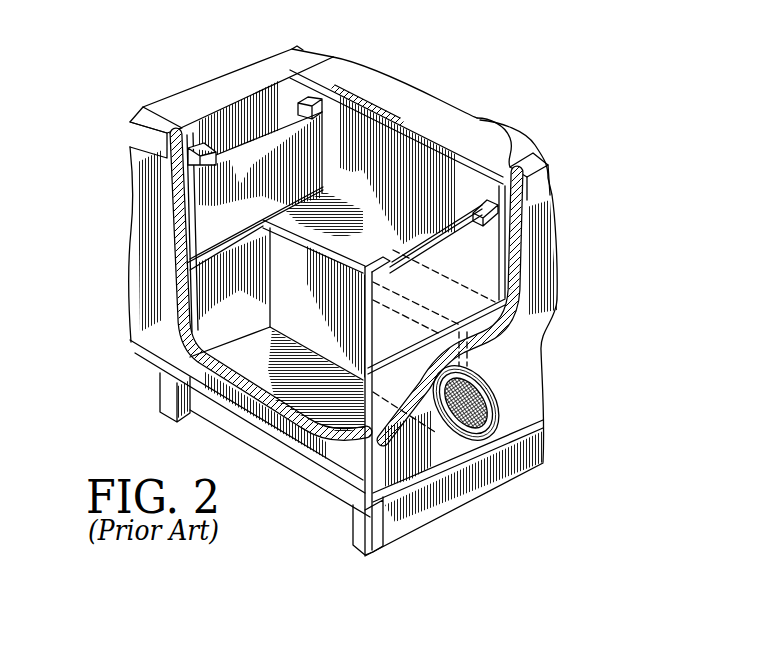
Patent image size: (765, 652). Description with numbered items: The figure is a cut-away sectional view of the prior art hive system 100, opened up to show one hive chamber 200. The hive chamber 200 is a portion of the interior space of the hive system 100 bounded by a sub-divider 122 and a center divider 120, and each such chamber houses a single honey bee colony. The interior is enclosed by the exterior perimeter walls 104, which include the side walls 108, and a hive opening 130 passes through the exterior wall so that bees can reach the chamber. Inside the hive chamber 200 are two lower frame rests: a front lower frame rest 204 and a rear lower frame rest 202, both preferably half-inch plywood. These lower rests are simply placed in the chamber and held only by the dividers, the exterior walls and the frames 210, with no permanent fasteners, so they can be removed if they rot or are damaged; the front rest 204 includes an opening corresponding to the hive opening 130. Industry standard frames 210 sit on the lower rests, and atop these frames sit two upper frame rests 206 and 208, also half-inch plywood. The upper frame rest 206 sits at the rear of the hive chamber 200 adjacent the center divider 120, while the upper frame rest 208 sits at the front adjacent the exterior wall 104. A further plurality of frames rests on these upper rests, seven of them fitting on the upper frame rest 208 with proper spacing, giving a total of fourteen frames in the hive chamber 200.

The hive system 100 is at (174, 95).
The exterior perimeter wall 104 is at (522, 378).
The side wall 108 is at (138, 146).
The center divider 120 is at (268, 90).
The sub-divider 122 is at (470, 165).
The hive opening 130 is at (503, 392).
The hive chamber 200 is at (413, 153).
The rear lower frame rest 202 is at (118, 241).
The front lower frame rest 204 is at (363, 398).
The upper frame rest 206 is at (262, 134).
The upper frame rest 208 is at (477, 200).
The frames 210 is at (350, 227).